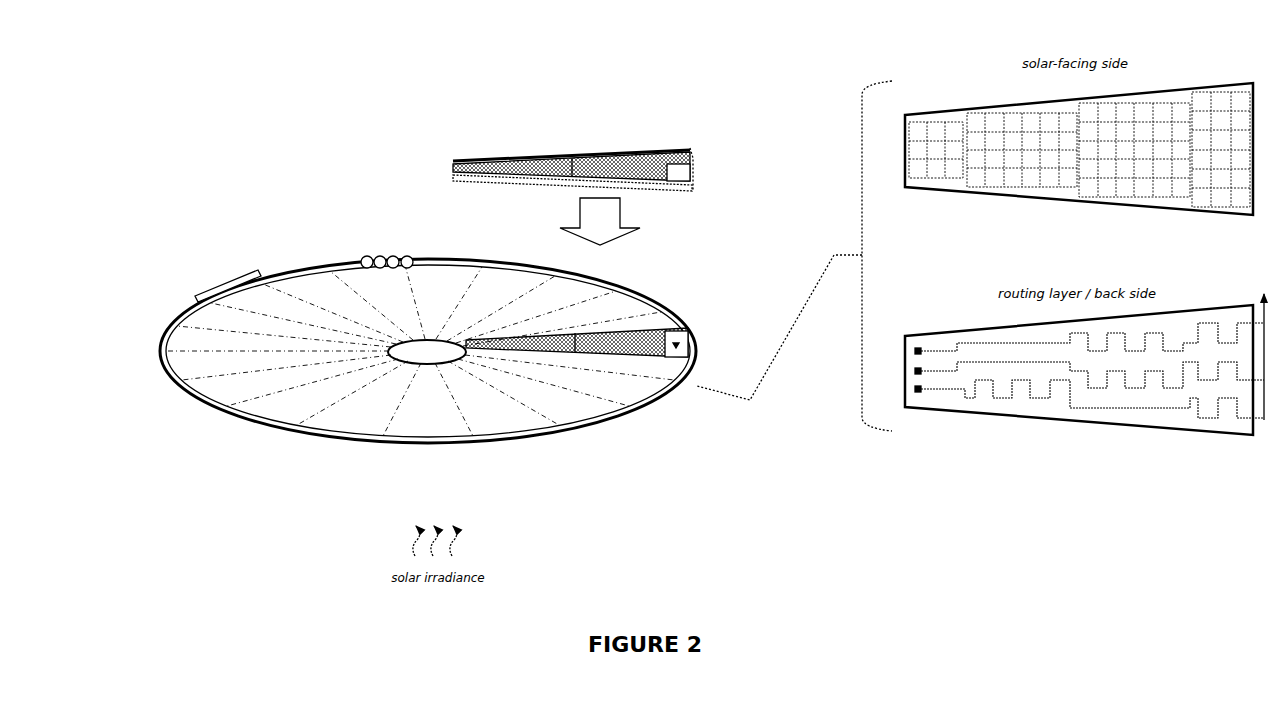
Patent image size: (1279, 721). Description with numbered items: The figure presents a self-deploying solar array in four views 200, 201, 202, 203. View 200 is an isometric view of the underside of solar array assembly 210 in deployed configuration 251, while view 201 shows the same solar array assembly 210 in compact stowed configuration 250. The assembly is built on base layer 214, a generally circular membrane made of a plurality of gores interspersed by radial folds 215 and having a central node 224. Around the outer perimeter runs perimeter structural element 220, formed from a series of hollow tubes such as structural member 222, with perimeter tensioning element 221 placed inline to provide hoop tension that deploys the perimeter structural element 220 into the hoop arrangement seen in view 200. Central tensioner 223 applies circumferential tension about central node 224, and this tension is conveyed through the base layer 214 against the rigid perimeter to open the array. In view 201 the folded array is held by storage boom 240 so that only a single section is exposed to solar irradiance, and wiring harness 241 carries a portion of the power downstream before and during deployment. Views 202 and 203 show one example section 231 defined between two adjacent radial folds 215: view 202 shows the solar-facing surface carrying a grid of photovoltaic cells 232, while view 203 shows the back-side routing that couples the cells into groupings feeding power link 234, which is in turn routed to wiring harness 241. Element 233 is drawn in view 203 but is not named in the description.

The view 200 is at (200, 216).
The view 201 is at (518, 113).
The view 202 is at (936, 40).
The view 203 is at (936, 284).
The solar array assembly 210 is at (196, 428).
The base layer 214 is at (360, 412).
The radial folds 215 is at (405, 401).
The perimeter structural element 220 is at (157, 352).
The perimeter tensioning element 221 is at (382, 254).
The structural member 222 is at (208, 288).
The central tensioner 223 is at (425, 337).
The central node 224 is at (417, 359).
The section 231 is at (1068, 204).
The photovoltaic cells 232 is at (1013, 162).
The routing traces 233 is at (1022, 389).
The power link 234 is at (1265, 427).
The storage boom 240 is at (646, 326).
The wiring harness 241 is at (676, 330).
The stowed configuration 250 is at (636, 134).
The deployed configuration 251 is at (606, 440).